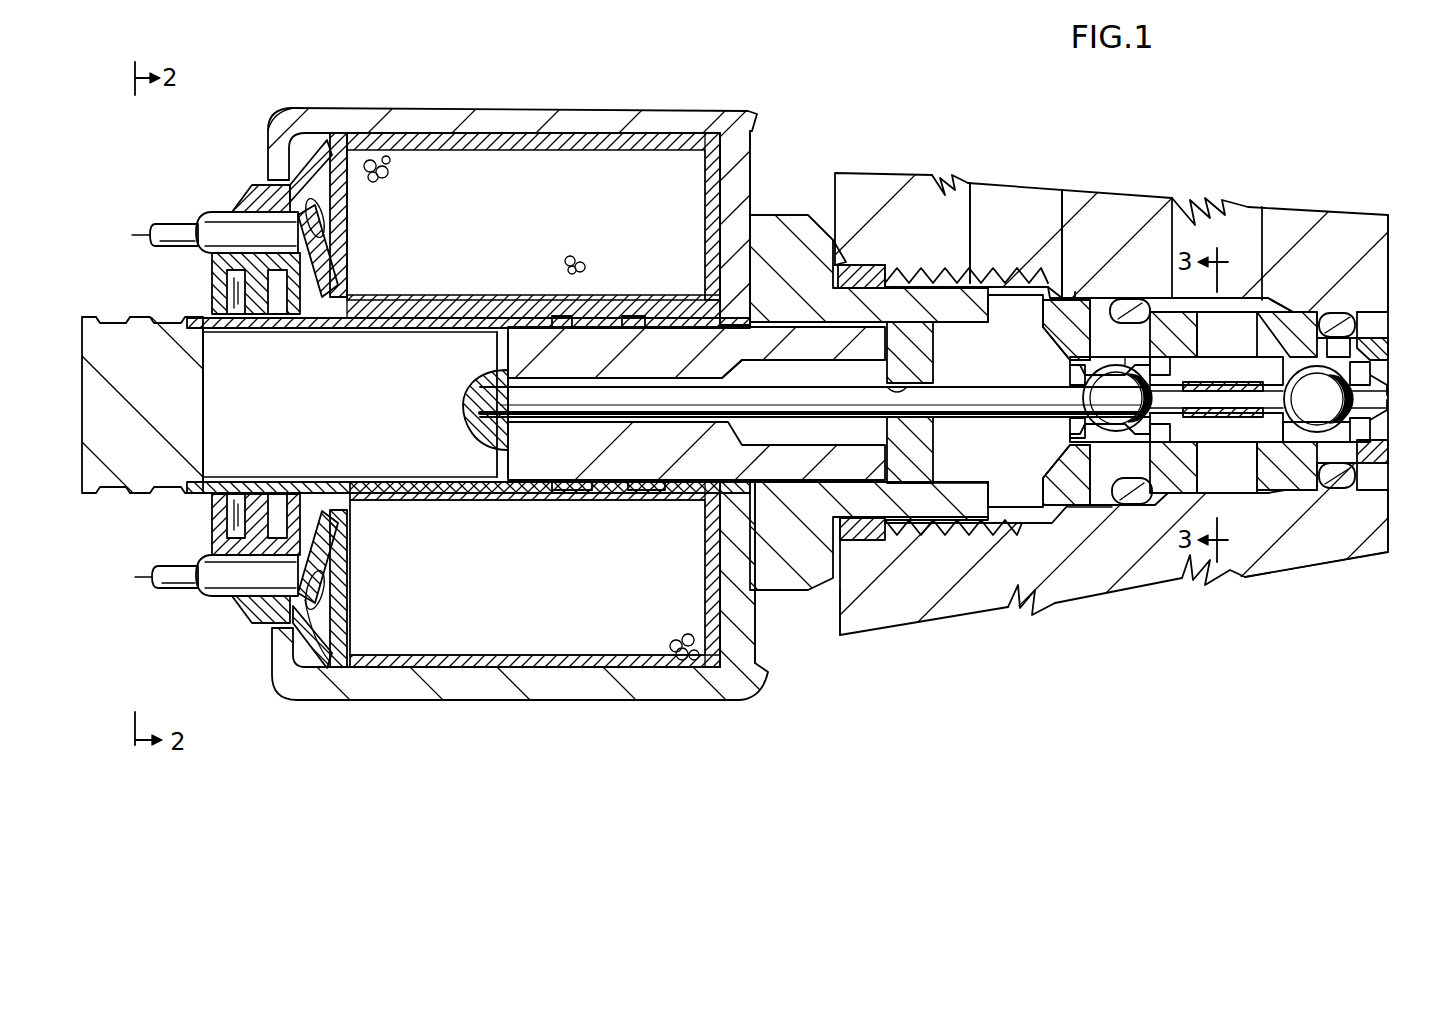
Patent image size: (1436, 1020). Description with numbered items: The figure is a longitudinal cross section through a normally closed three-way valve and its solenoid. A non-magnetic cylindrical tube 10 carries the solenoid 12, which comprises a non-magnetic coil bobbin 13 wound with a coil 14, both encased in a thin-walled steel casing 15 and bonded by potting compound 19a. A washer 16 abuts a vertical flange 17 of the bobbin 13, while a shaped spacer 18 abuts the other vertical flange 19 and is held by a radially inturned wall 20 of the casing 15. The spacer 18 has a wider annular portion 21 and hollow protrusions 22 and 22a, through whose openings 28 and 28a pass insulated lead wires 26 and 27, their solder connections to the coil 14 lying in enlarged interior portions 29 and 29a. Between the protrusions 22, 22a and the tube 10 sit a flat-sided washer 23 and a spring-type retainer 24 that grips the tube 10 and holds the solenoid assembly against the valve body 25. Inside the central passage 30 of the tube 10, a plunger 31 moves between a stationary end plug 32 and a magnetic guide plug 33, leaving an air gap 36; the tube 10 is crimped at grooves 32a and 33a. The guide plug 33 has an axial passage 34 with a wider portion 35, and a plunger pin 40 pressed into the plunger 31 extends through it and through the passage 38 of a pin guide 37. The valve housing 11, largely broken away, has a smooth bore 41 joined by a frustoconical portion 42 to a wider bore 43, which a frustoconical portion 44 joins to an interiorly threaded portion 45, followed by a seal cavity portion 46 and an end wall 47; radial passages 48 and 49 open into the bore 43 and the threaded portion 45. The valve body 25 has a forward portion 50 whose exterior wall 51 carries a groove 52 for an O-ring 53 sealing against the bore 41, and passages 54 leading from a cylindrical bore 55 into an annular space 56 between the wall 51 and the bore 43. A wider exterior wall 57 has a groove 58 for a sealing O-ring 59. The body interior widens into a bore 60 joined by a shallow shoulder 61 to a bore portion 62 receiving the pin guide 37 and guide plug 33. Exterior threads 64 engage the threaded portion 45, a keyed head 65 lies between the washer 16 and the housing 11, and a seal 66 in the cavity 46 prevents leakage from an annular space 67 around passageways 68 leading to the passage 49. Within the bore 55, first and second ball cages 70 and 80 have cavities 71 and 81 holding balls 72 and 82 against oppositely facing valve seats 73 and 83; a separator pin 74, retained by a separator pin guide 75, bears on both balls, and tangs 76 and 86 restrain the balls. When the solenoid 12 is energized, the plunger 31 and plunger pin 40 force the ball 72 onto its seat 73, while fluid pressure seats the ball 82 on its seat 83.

The cylindrical tube 10 is at (158, 316).
The valve housing 11 is at (862, 178).
The solenoid 12 is at (488, 705).
The coil bobbin 13 is at (680, 505).
The coil 14 is at (527, 580).
The casing 15 is at (475, 120).
The washer 16 is at (752, 160).
The vertical flange 17 is at (712, 196).
The spacer 18 is at (253, 625).
The vertical flange 19 is at (340, 634).
The potting compound 19a is at (560, 140).
The radially inturned wall 20 is at (270, 170).
The wider annular portion 21 is at (338, 722).
The protrusion 22 is at (232, 185).
The protrusion 22a is at (232, 536).
The flat-sided washer 23 is at (256, 275).
The spring-type retainer 24 is at (227, 295).
The valve body 25 is at (936, 402).
The insulated lead wire 26 is at (180, 224).
The insulated lead wire 27 is at (180, 582).
The opening 28 is at (224, 210).
The opening 28a is at (228, 600).
The enlarged interior portion 29 is at (335, 195).
The enlarged interior portion 29a is at (318, 660).
The central passage 30 is at (332, 328).
The plunger 31 is at (355, 405).
The end plug 32 is at (417, 500).
The groove 32a is at (158, 322).
The guide plug 33 is at (672, 500).
The groove 33a is at (562, 328).
The axial passage 34 is at (686, 378).
The wider portion 35 is at (712, 378).
The air gap 36 is at (510, 438).
The pin guide 37 is at (925, 348).
The passage 38 is at (912, 386).
The plunger pin 40 is at (933, 401).
The smooth cylindrical bore 41 is at (1390, 312).
The frustoconical portion 42 is at (1275, 300).
The wider smooth cylindrical bore 43 is at (1250, 500).
The frustoconical portion 44 is at (1082, 298).
The interiorly threaded portion 45 is at (1012, 280).
The seal cavity portion 46 is at (890, 540).
The end wall 47 is at (840, 232).
The radial passage 48 is at (1217, 249).
The radial passage 49 is at (1016, 195).
The forward portion 50 is at (1388, 356).
The exterior wall 51 is at (1388, 306).
The circumferential groove 52 is at (1388, 340).
The O-ring 53 is at (1312, 312).
The passages 54 is at (1221, 327).
The smooth cylindrical bore 55 is at (1268, 365).
The annular space 56 is at (1282, 492).
The wider exterior wall 57 is at (1050, 512).
The circumferential groove 58 is at (1145, 455).
The sealing O-ring 59 is at (1120, 480).
The bore 60 is at (977, 490).
The shallow shoulder 61 is at (945, 490).
The bore portion 62 is at (826, 470).
The exterior threads 64 is at (940, 270).
The keyed head 65 is at (822, 565).
The seal 66 is at (872, 275).
The annular space 67 is at (1052, 290).
The passageways 68 is at (1012, 310).
The first ball valve cage 70 is at (1105, 360).
The cavity 71 is at (1128, 360).
The first ball 72 is at (1117, 398).
The valve seat 73 is at (1152, 370).
The separator pin 74 is at (1168, 420).
The separator pin guide 75 is at (1210, 424).
The tangs 76 is at (1068, 374).
The second ball valve cage 80 is at (1287, 334).
The cavity 81 is at (1340, 360).
The second ball 82 is at (1318, 399).
The valve seat 83 is at (1288, 428).
The tangs 86 is at (1375, 418).